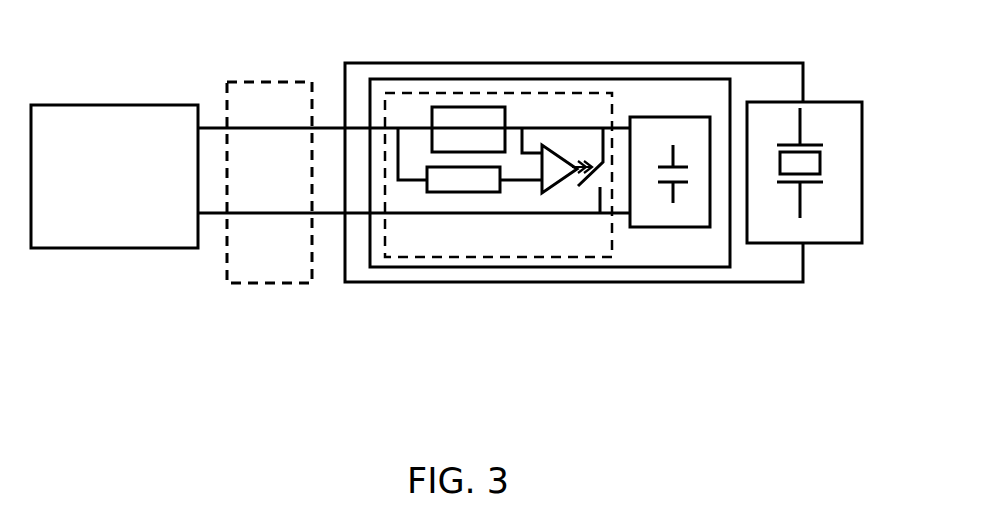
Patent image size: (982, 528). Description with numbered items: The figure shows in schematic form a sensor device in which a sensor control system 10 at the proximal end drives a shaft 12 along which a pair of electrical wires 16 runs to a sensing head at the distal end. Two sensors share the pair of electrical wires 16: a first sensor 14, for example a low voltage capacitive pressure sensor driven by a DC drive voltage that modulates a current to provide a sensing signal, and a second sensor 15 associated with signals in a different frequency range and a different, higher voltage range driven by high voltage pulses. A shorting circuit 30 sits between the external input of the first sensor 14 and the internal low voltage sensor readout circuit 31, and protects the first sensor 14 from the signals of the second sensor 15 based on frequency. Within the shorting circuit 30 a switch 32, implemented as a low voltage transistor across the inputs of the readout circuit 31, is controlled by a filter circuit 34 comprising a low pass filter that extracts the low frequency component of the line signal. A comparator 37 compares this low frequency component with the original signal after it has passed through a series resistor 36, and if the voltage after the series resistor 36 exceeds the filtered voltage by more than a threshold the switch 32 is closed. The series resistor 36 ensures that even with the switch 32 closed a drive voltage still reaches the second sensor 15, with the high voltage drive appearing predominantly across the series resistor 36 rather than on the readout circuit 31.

The sensor control system 10 is at (155, 248).
The shaft 12 is at (257, 82).
The first sensor 14 is at (697, 282).
The second sensor 15 is at (850, 243).
The pair of electrical wires 16 is at (286, 128).
The shorting circuit 30 is at (485, 257).
The sensor readout circuit 31 is at (645, 117).
The switch 32 is at (592, 185).
The filter circuit 34 is at (460, 192).
The series resistor 36 is at (487, 107).
The comparator 37 is at (560, 146).